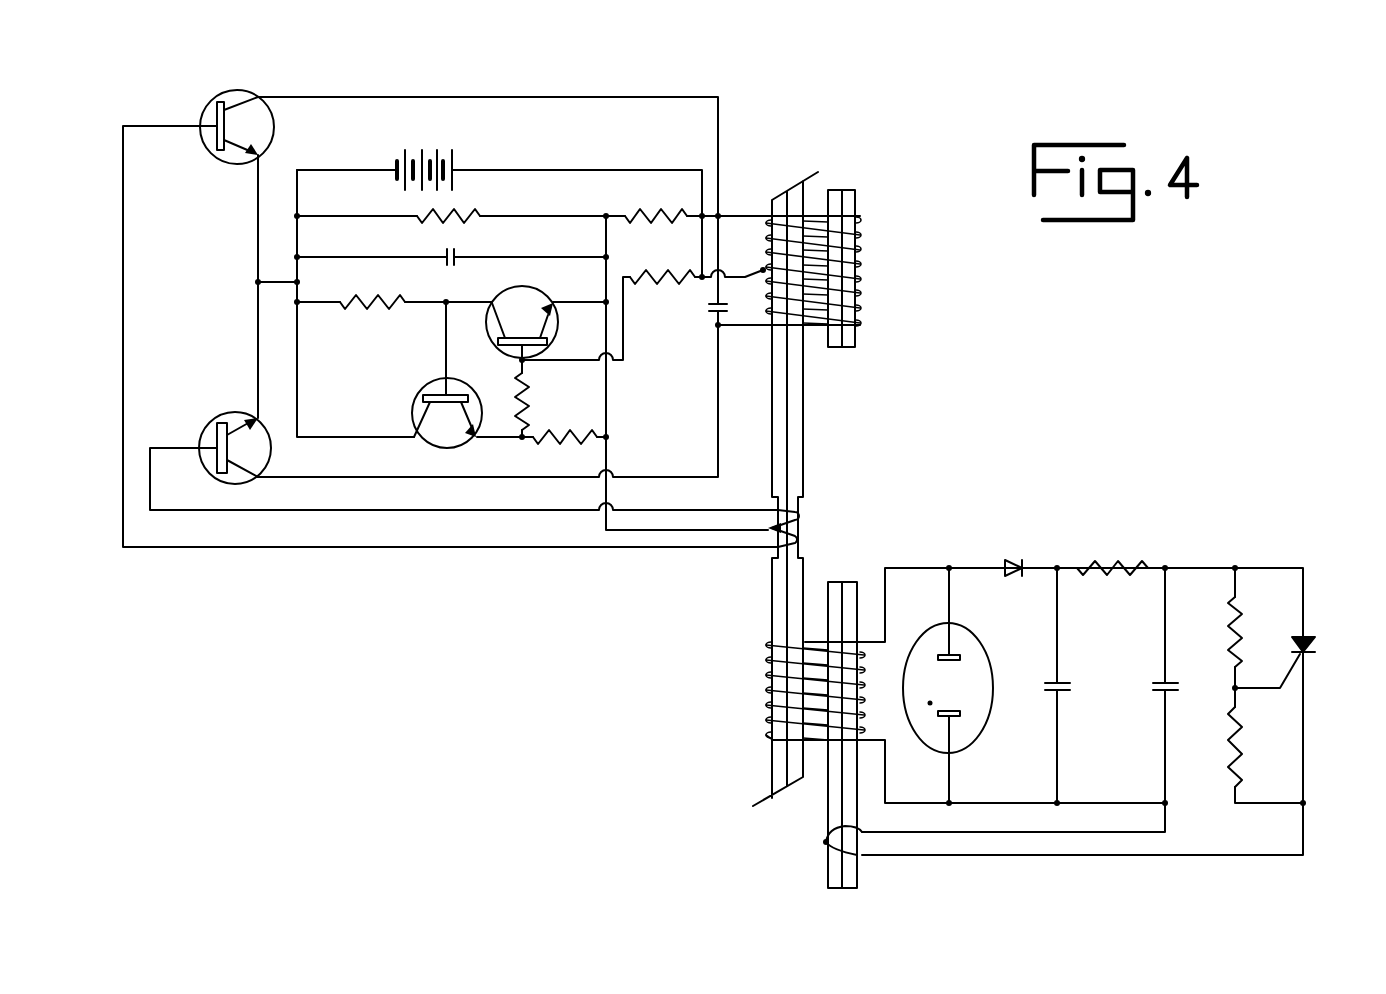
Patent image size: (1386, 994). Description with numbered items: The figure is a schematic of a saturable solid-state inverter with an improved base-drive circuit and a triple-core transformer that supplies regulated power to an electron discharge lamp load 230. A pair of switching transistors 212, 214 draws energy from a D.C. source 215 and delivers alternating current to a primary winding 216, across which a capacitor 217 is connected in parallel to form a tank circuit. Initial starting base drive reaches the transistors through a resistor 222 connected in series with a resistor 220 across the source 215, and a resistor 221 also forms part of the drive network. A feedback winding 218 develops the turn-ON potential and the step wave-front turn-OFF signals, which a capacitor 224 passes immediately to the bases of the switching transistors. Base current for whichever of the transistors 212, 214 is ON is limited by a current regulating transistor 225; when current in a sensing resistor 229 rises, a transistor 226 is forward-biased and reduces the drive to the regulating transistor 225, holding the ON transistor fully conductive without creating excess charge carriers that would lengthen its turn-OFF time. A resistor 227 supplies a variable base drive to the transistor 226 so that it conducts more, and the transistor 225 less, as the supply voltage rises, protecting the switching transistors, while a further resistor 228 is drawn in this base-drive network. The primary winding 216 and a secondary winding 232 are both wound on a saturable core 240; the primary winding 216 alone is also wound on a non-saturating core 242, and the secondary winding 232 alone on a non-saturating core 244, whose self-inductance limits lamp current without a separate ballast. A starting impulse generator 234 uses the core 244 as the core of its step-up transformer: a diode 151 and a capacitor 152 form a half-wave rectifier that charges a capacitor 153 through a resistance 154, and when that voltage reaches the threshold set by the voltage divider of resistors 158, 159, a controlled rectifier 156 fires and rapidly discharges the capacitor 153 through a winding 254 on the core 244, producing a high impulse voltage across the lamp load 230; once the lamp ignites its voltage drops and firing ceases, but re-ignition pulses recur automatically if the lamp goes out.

The switching transistor 212 is at (240, 92).
The switching transistor 214 is at (208, 425).
The D.C. source 215 is at (455, 165).
The primary winding 216 is at (865, 218).
The capacitor 217 is at (713, 313).
The feedback winding 218 is at (802, 538).
The resistor 220 is at (478, 215).
The resistor 221 is at (383, 298).
The resistor 222 is at (640, 190).
The capacitor 224 is at (457, 255).
The current regulating transistor 225 is at (456, 450).
The transistor 226 is at (538, 295).
The resistor 227 is at (680, 275).
The resistor 228 is at (530, 375).
The sensing resistor 229 is at (555, 442).
The lamp load 230 is at (983, 638).
The secondary winding 232 is at (765, 703).
The starting impulse generator 234 is at (1160, 548).
The saturable core 240 is at (806, 425).
The non-saturating core 242 is at (858, 340).
The non-saturating core 244 is at (826, 590).
The trigger winding 254 is at (826, 845).
The diode 151 is at (1015, 562).
The capacitor 152 is at (1066, 692).
The capacitor 153 is at (1158, 680).
The resistance 154 is at (1112, 565).
The controlled rectifier 156 is at (1310, 640).
The resistor 158 is at (1228, 612).
The resistor 159 is at (1228, 760).